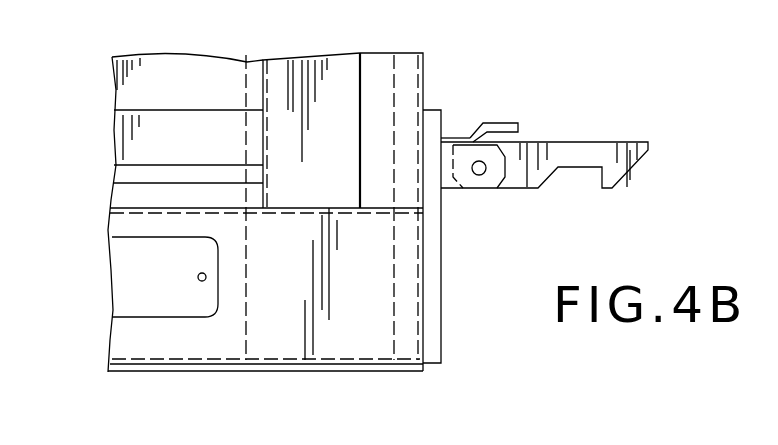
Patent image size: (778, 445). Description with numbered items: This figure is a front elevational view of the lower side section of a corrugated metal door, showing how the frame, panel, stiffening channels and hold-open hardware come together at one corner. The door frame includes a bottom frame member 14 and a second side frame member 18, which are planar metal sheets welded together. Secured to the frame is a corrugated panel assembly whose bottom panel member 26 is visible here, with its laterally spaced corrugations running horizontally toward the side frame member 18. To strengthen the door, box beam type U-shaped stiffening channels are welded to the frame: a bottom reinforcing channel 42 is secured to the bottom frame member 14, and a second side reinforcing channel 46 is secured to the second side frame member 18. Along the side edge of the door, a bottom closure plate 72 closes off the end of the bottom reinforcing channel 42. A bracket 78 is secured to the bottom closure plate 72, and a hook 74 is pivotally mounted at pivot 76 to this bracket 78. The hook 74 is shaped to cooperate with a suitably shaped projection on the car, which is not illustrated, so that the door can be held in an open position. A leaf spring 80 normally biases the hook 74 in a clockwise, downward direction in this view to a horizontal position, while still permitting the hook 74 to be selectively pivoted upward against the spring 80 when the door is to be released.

The bottom frame member 14 is at (332, 368).
The second side frame member 18 is at (410, 85).
The bottom panel member 26 is at (127, 87).
The bottom reinforcing channel 42 is at (222, 343).
The second side reinforcing channel 46 is at (338, 75).
The bottom closure plate 72 is at (433, 328).
The hook 74 is at (573, 143).
The pivot 76 is at (485, 172).
The bracket 78 is at (450, 177).
The leaf spring 80 is at (500, 122).